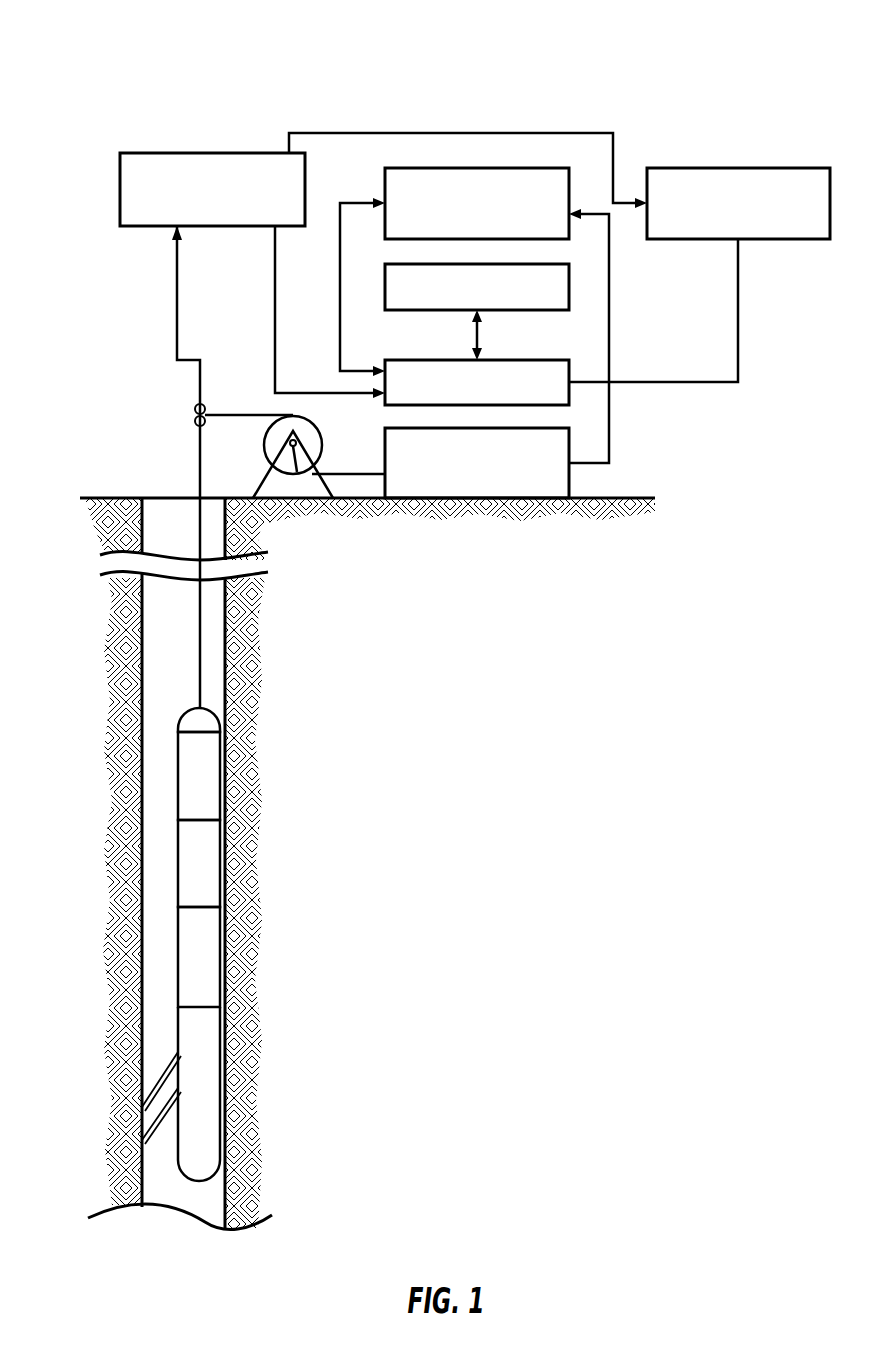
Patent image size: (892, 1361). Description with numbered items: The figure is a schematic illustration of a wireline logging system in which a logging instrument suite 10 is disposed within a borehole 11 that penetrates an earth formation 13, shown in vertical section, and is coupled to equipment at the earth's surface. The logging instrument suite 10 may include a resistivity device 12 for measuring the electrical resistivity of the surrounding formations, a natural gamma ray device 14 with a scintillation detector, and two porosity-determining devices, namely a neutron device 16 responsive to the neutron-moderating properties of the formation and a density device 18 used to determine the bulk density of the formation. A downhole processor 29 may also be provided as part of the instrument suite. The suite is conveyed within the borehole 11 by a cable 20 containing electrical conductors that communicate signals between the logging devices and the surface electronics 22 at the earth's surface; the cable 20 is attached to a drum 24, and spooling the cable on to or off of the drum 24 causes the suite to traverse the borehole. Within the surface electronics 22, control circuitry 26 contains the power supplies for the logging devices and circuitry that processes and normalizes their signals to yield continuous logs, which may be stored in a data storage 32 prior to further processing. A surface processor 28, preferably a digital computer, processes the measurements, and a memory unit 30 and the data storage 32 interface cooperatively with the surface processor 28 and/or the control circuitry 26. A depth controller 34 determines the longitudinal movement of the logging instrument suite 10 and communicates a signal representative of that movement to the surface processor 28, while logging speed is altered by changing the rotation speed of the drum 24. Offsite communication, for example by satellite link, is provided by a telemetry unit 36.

The surface electronics 22 is at (122, 36).
The depth controller 34 is at (162, 152).
The data storage 32 is at (430, 168).
The telemetry unit 36 is at (733, 168).
The memory unit 30 is at (445, 310).
The surface processor 28 is at (545, 350).
The control circuitry 26 is at (385, 440).
The drum 24 is at (268, 458).
The cable 20 is at (287, 633).
The earth formation 13 is at (215, 628).
The borehole 11 is at (287, 668).
The downhole processor 29 is at (268, 703).
The resistivity device 12 is at (270, 752).
The natural gamma ray device 14 is at (208, 853).
The logging instrument suite 10 is at (295, 880).
The neutron device 16 is at (210, 955).
The density device 18 is at (210, 1032).